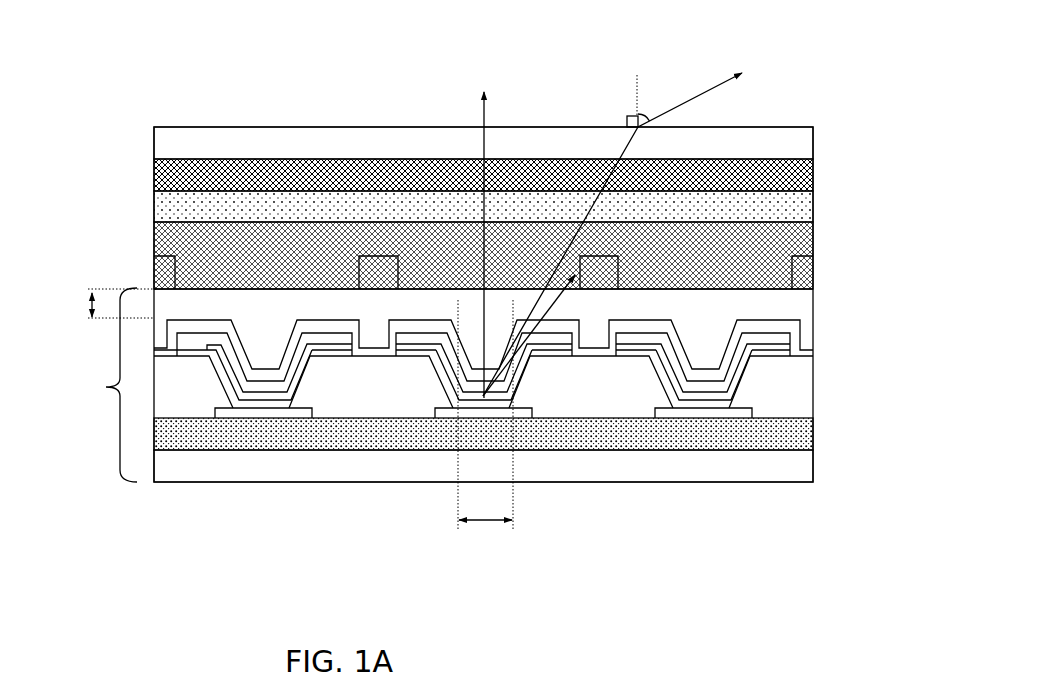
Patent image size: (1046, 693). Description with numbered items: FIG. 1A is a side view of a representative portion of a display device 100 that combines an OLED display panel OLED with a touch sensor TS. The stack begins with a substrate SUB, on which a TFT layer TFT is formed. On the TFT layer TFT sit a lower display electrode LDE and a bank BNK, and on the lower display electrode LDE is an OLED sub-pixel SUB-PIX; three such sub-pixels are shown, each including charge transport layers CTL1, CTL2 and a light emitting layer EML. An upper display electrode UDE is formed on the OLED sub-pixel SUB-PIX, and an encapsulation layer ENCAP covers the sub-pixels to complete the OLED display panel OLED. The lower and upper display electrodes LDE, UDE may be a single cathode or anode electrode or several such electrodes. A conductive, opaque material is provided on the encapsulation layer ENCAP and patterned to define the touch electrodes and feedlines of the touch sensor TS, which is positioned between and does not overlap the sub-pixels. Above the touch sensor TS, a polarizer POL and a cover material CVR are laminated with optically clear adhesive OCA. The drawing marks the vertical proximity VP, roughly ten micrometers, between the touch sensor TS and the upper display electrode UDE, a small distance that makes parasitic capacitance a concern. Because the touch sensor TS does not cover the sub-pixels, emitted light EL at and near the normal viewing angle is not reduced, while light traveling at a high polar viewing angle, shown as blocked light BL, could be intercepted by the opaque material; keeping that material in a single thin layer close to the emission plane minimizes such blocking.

The display device 100 is at (257, 115).
The cover material CVR is at (150, 134).
The optically clear adhesive OCA is at (150, 170).
The polarizer POL is at (150, 205).
The touch sensor TS is at (150, 270).
The blocked light BL is at (556, 308).
The vertical proximity VP is at (80, 304).
The OLED display panel OLED is at (92, 385).
The encapsulation layer ENCAP is at (817, 316).
The upper display electrode UDE is at (817, 353).
The charge transport layer CTL2 is at (770, 348).
The light emitting layer EML is at (468, 405).
The charge transport layer CTL1 is at (543, 360).
The bank BNK is at (817, 392).
The lower display electrode LDE is at (273, 417).
The TFT layer TFT is at (817, 433).
The substrate SUB is at (817, 467).
The emitted light EL is at (502, 102).
The OLED sub-pixel SUB-PIX is at (490, 532).